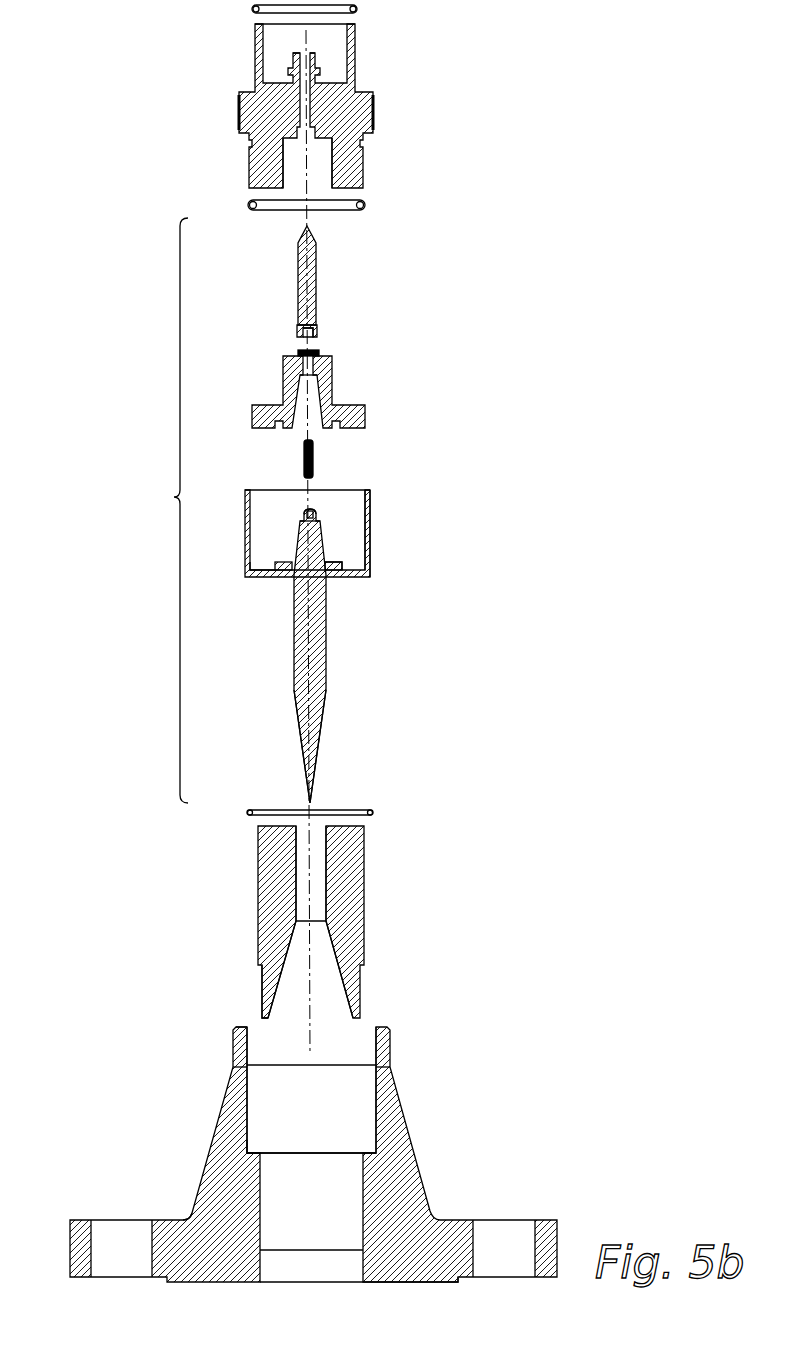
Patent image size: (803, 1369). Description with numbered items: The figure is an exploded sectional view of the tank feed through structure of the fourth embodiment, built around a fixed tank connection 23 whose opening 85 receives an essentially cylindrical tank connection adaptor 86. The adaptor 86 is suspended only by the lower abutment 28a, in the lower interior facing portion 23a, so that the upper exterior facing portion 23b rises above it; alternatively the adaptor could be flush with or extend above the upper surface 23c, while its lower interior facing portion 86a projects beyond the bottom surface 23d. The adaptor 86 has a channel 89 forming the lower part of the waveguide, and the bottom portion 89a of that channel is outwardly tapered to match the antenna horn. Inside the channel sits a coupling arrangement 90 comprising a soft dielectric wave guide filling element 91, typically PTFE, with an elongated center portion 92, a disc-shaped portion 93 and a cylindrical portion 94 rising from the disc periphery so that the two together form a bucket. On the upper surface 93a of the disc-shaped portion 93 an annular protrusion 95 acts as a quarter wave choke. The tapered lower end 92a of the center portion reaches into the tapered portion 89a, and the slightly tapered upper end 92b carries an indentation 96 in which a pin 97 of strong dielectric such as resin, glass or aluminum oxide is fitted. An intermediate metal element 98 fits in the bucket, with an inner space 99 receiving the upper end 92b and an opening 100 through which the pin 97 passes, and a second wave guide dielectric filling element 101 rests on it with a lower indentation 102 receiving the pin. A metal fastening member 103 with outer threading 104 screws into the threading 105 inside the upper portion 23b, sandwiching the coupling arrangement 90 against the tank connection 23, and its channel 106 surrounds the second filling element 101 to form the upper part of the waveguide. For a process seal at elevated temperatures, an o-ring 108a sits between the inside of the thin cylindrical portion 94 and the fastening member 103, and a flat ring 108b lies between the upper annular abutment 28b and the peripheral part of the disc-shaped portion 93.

The fixed tank connection 23 is at (210, 1182).
The lower (interior facing) portion of the tank connection 23a is at (362, 1270).
The upper (exterior facing) portion of the tank connection 23b is at (386, 1088).
The upper surface of the tank connection structure 23c is at (385, 1027).
The bottom surface of the tank connection 23d is at (412, 1292).
The lower abutment 28a is at (198, 1217).
The upper annular abutment 28b is at (252, 1148).
The opening 85 is at (343, 1052).
The tank connection adaptor 86 is at (365, 850).
The lower (interior facing) portion of the adaptor 86a is at (272, 972).
The channel 89 is at (305, 832).
The bottom portion of the channel 89a is at (330, 968).
The coupling arrangement 90 is at (159, 510).
The dielectric wave guide filling element 91 is at (420, 602).
The first elongated center portion 92 is at (320, 668).
The tapered lower end of the center portion 92a is at (322, 752).
The upper end of the center portion 92b is at (323, 545).
The second disc-shaped portion 93 is at (350, 578).
The upper surface of the disc-shaped portion 93a is at (260, 567).
The third cylindrical portion 94 is at (372, 545).
The annular protrusion 95 is at (340, 562).
The indentation 96 is at (311, 509).
The pin 97 is at (315, 462).
The intermediate metal element 98 is at (332, 386).
The inner space 99 is at (300, 422).
The opening 100 is at (320, 345).
The second wave guide dielectric filling element 101 is at (317, 283).
The indentation 102 is at (300, 348).
The metal fastening member 103 is at (353, 174).
The outer threading 104 is at (372, 115).
The threading 105 is at (254, 1047).
The channel 106 is at (309, 60).
The o-ring 108a is at (365, 203).
The flat ring 108b is at (365, 812).